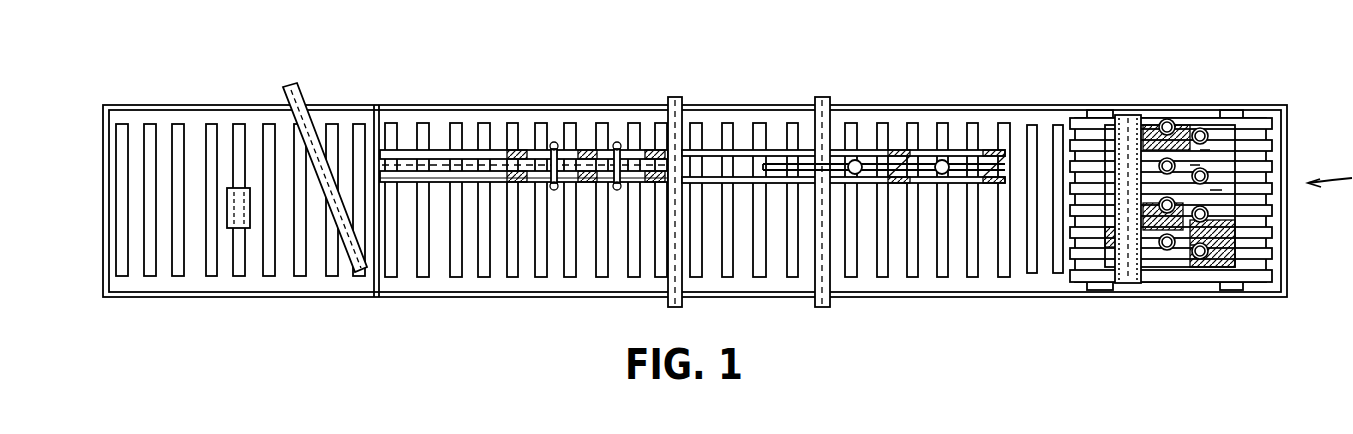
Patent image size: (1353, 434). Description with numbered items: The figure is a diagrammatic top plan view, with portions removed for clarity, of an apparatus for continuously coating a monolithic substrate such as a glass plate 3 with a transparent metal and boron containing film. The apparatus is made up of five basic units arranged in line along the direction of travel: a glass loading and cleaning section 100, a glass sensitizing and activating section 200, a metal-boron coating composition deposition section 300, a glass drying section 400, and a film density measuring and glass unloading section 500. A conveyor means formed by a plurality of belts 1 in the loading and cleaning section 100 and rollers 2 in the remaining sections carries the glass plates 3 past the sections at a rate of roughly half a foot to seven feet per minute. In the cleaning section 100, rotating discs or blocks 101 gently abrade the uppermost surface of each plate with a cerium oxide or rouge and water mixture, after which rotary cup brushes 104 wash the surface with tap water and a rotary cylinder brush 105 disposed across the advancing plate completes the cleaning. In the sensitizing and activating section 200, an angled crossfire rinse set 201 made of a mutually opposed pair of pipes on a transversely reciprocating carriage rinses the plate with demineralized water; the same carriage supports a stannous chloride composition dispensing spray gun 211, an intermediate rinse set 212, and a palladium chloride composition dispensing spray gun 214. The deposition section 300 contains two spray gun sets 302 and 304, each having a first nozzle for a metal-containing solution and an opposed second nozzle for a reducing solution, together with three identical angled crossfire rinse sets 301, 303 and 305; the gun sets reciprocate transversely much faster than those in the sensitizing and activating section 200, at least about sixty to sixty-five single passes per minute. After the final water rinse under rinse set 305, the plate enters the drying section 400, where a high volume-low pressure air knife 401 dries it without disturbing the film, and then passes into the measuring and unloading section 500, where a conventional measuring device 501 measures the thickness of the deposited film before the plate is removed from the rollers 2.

The belts 1 is at (1273, 241).
The rollers 2 is at (1057, 274).
The glass plates 3 is at (1238, 240).
The glass loading and cleaning section 100 is at (1290, 55).
The rotating discs or blocks 101 is at (1200, 128).
The rotary cup brushes 104 is at (1166, 118).
The rotary cylinder brush 105 is at (1135, 284).
The glass sensitizing and activating section 200 is at (1093, 55).
The angled crossfire rinse set 201 is at (991, 152).
The stannous chloride composition dispensing spray gun 211 is at (943, 160).
The intermediate rinse set 212 is at (893, 152).
The palladium chloride composition dispensing spray gun 214 is at (851, 160).
The metal-boron coating composition deposition section 300 is at (755, 55).
The angled crossfire rinse set 301 is at (648, 152).
The spray gun set 302 is at (616, 190).
The angled crossfire rinse set 303 is at (586, 160).
The spray gun set 304 is at (554, 190).
The angled crossfire rinse set 305 is at (514, 152).
The glass drying section 400 is at (375, 55).
The air knife 401 is at (299, 90).
The film density measuring and glass unloading section 500 is at (275, 55).
The measuring device 501 is at (229, 190).